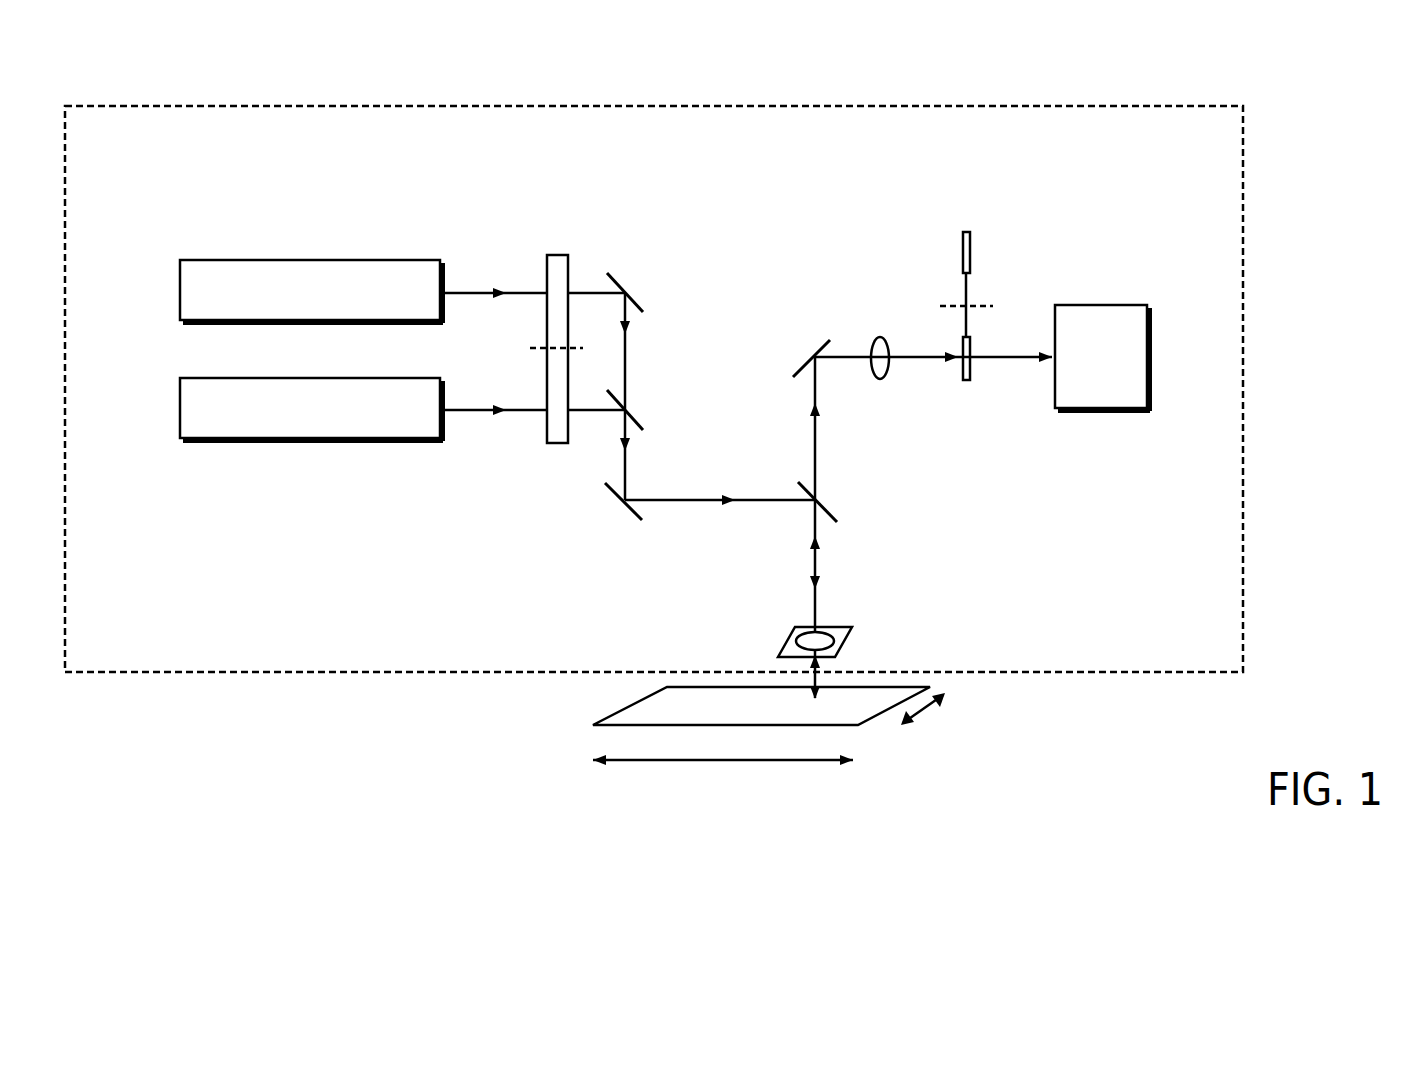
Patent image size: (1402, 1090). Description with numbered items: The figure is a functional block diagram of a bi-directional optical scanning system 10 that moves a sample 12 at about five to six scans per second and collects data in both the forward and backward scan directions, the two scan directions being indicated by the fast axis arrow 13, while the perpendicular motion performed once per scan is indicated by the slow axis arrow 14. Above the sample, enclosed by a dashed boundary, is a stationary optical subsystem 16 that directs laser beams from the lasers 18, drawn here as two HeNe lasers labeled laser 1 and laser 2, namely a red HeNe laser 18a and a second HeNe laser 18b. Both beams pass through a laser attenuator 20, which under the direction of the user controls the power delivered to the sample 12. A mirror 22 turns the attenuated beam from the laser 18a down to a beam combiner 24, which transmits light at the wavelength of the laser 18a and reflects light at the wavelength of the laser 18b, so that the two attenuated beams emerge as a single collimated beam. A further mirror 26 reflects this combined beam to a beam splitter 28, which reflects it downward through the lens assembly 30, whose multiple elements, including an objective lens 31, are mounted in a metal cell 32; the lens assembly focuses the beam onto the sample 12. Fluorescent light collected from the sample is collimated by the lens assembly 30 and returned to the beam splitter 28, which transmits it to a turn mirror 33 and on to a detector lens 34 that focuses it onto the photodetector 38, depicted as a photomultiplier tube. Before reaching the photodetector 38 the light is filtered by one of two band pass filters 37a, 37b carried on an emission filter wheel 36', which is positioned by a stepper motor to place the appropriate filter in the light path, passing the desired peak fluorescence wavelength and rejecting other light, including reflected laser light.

The bi-directional optical scanning system 10 is at (382, 812).
The sample 12 is at (860, 727).
The fast axis arrow 13 is at (994, 723).
The slow axis arrow 14 is at (723, 789).
The stationary optical subsystem 16 is at (868, 76).
The lasers 18 is at (311, 236).
The red HeNe laser 18a is at (271, 308).
The green HeNe laser 18b is at (271, 427).
The laser 1 is at (311, 308).
The laser 2 is at (311, 427).
The laser attenuator 20 is at (547, 322).
The mirror 22 is at (645, 311).
The beam combiner 24 is at (632, 417).
The mirror 26 is at (644, 519).
The beam splitter 28 is at (824, 498).
The lens assembly 30 is at (907, 622).
The objective lens 31 is at (801, 629).
The metal cell 32 is at (778, 642).
The turn mirror 33 is at (797, 358).
The detector lens 34 is at (887, 346).
The emission filter wheel 36' is at (972, 277).
The filter 37a is at (963, 250).
The filter 37b is at (972, 375).
The photodetector 38 is at (1122, 305).